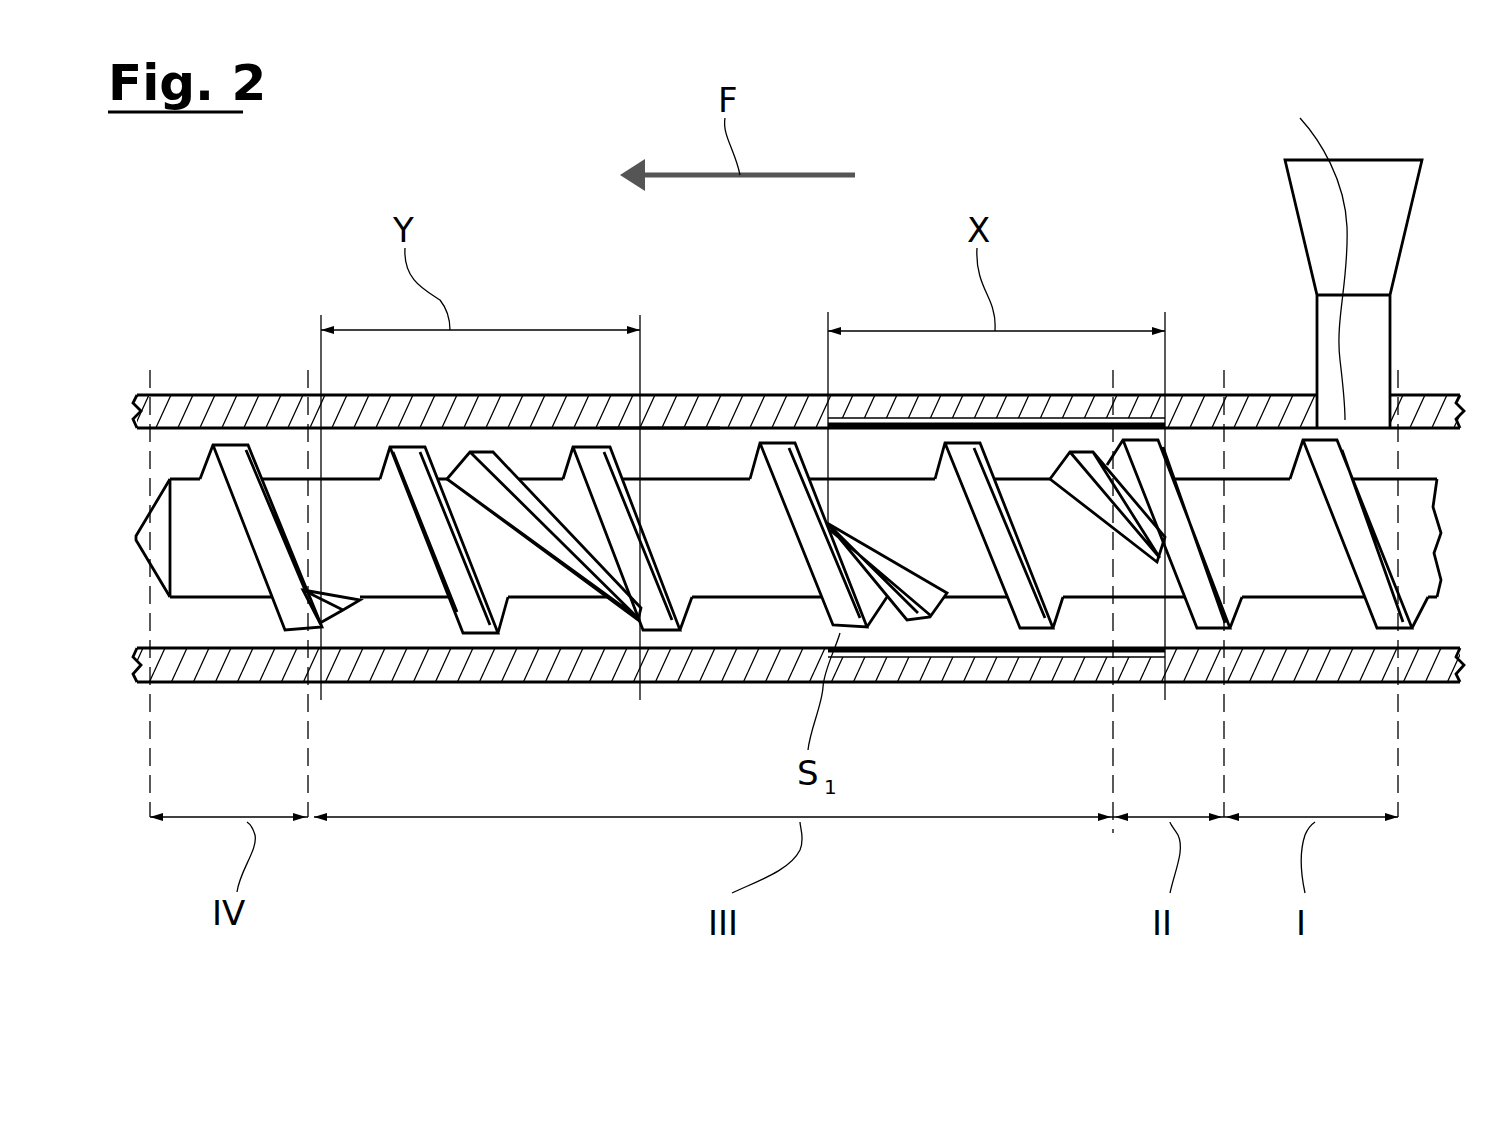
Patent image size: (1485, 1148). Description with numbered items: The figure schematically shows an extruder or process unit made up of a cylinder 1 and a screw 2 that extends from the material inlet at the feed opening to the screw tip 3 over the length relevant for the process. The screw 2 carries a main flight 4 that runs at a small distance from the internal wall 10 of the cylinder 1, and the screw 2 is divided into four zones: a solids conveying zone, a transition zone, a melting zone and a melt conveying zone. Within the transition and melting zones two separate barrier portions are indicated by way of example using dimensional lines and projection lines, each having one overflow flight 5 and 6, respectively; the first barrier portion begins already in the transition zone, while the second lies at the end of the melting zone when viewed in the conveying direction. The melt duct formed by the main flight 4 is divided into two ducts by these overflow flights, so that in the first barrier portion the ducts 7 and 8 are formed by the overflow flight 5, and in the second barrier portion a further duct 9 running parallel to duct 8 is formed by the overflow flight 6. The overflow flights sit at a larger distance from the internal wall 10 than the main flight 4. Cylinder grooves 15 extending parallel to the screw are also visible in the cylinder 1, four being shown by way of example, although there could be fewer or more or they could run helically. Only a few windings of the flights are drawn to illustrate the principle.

The cylinder 1 is at (247, 405).
The screw 2 is at (877, 523).
The screw tip 3 is at (158, 532).
The main flight 4 is at (782, 463).
The overflow flight 5 is at (1103, 505).
The overflow flight 6 is at (343, 608).
The duct 7 is at (1032, 467).
The duct 8 is at (895, 457).
The further duct 9 is at (548, 462).
The internal wall 10 is at (655, 447).
The cylinder grooves 15 is at (1073, 650).